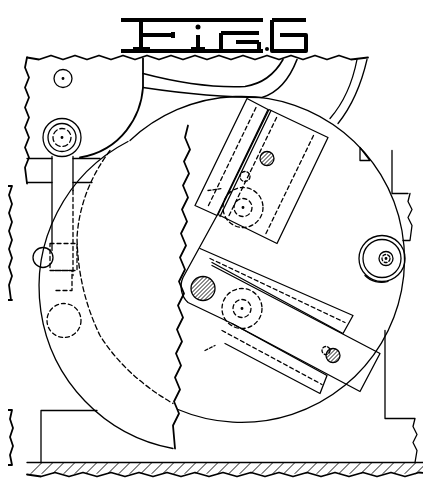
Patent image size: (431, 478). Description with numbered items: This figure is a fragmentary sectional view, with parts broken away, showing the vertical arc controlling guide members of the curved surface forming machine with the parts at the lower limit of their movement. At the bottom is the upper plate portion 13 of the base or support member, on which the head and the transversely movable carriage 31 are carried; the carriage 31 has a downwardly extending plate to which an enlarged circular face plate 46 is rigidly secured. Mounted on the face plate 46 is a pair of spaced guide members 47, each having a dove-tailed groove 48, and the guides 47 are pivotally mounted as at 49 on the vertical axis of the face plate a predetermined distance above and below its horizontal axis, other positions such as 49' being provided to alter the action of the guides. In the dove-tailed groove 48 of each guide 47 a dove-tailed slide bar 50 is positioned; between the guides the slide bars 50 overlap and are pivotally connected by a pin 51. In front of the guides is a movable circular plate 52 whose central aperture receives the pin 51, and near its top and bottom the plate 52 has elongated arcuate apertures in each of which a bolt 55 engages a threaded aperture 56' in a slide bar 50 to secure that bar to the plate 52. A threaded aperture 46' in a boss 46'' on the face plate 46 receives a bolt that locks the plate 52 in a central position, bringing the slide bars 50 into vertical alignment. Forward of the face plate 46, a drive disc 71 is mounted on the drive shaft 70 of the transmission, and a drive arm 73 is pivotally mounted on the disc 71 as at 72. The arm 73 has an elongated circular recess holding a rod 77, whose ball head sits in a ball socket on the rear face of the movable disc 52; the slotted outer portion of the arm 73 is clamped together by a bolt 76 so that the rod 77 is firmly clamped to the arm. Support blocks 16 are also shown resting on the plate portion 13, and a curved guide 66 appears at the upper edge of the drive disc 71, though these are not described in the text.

The upper plate portion 13 is at (233, 462).
The support blocks 16 is at (55, 410).
The transversely movable carriage 31 is at (392, 165).
The circular face plate 46 is at (206, 259).
The threaded aperture 46' is at (382, 252).
The boss 46'' is at (366, 289).
The guide members 47 is at (288, 218).
The dove-tailed groove 48 is at (295, 173).
The pivot 49 is at (252, 254).
The alternate pivot positions 49' is at (207, 271).
The dove-tailed slide bar 50 is at (207, 227).
The pin 51 is at (191, 287).
The movable circular plate 52 is at (77, 376).
The bolt 55 is at (243, 176).
The threaded aperture 56' is at (309, 253).
The curved guide slot 66 is at (350, 93).
The drive shaft 70 is at (73, 77).
The drive disc 71 is at (30, 90).
The pivot 72 is at (65, 128).
The drive arm 73 is at (53, 208).
The bolt 76 is at (38, 251).
The rod 77 is at (75, 298).